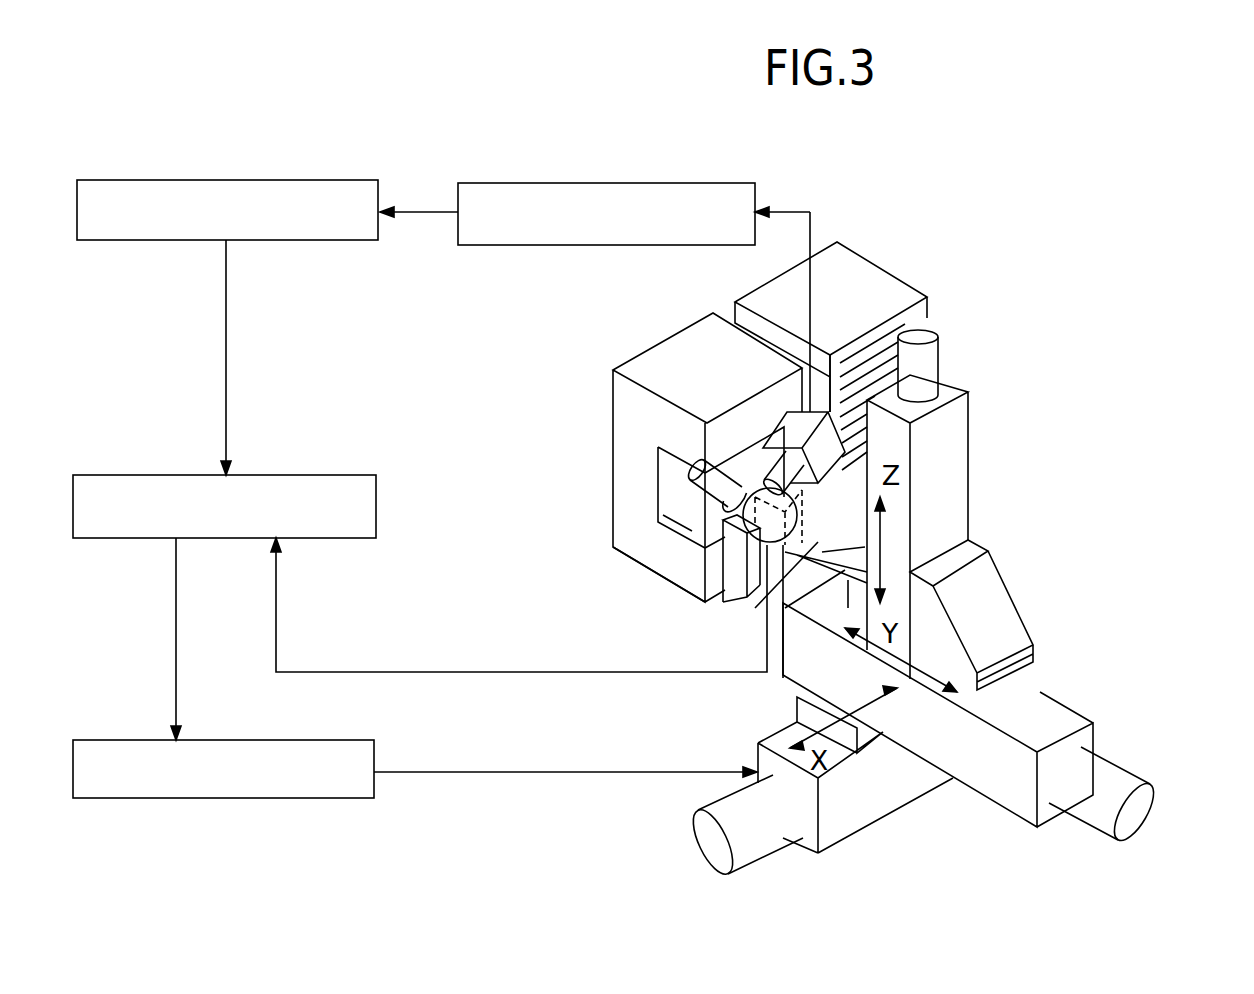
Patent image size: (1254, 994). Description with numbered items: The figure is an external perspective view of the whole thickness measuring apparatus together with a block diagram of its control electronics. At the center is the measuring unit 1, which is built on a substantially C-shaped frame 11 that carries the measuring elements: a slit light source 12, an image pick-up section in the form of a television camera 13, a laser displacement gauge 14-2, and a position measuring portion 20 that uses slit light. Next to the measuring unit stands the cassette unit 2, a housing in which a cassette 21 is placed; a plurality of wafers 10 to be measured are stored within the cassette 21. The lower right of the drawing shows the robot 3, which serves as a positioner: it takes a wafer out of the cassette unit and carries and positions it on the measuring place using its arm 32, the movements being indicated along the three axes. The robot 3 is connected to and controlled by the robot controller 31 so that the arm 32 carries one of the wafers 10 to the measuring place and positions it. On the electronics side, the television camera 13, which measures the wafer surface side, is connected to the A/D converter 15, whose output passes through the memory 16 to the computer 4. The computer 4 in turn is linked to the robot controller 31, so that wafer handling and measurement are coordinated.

The measuring unit 1 is at (693, 530).
The cassette unit 2 is at (870, 280).
The robot 3 is at (919, 627).
The computer 4 is at (343, 476).
The wafers 10 is at (764, 592).
The C-shaped frame 11 is at (627, 490).
The slit light source 12 is at (700, 462).
The television camera 13 is at (788, 430).
The laser displacement gauge 14-2 is at (672, 581).
The A/D converter 15 is at (640, 183).
The memory 16 is at (208, 180).
The position measuring portion 20 is at (750, 452).
The cassette 21 is at (910, 323).
The robot controller 31 is at (278, 798).
The arm 32 is at (787, 678).